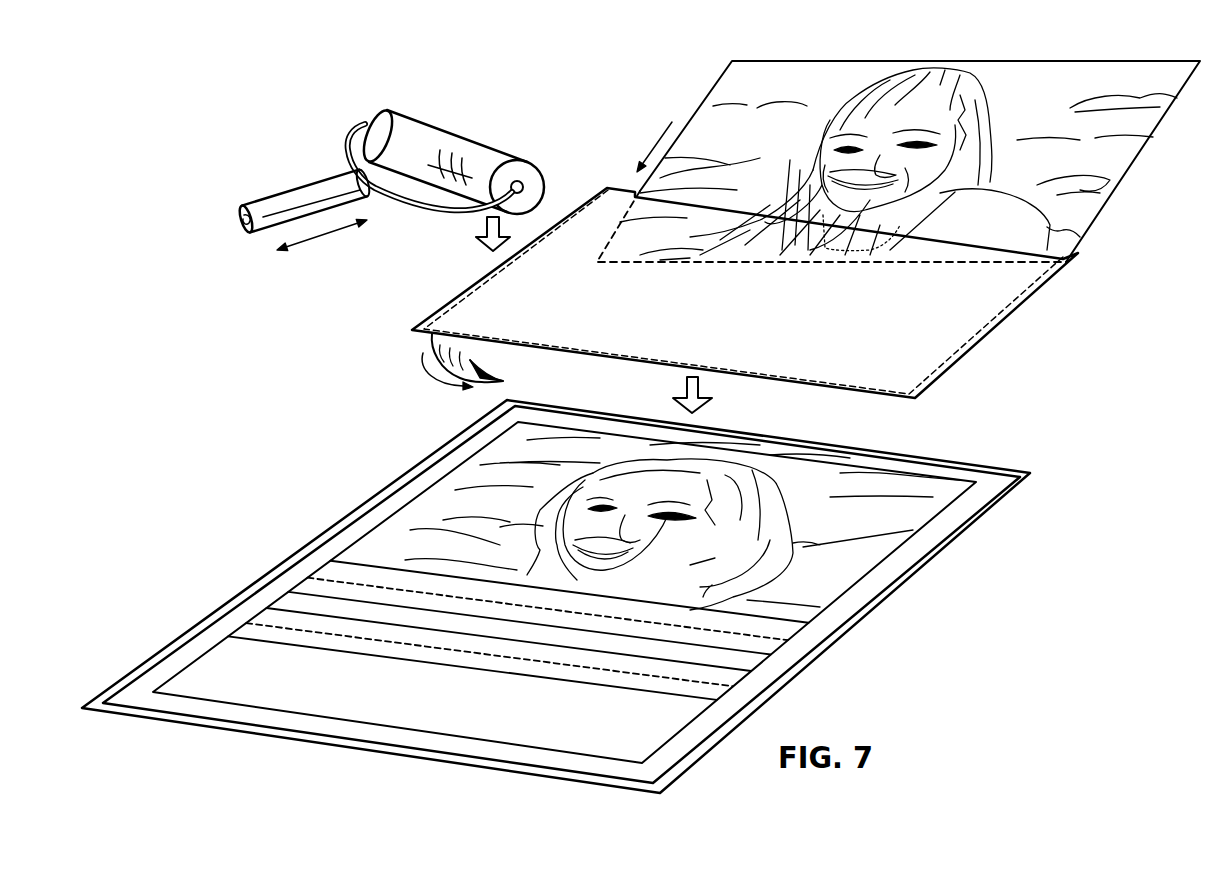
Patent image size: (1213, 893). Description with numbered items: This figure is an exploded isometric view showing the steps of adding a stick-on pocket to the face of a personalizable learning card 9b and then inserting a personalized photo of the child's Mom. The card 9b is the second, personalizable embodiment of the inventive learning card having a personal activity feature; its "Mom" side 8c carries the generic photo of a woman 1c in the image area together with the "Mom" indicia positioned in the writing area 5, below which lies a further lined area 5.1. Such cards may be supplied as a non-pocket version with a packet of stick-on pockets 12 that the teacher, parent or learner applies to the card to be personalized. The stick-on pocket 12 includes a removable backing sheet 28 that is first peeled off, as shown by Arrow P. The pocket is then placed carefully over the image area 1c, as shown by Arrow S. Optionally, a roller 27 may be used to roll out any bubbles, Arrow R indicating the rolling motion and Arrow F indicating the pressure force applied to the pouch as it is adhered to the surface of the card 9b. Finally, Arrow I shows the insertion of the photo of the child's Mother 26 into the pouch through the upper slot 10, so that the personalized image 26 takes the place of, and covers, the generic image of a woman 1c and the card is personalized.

The roller 27 is at (390, 132).
The personalized image 26 is at (1044, 116).
The upper slot 10 is at (1010, 249).
The stick-on pocket 12 is at (945, 375).
The removable backing sheet 28 is at (432, 340).
The Mom side of the card 8c is at (423, 506).
The generic photo of the woman 1c is at (745, 551).
The writing area 5 is at (303, 586).
The lower panel area 5.1 is at (427, 703).
The learning card 9b is at (942, 571).
The Arrow R (roll) R is at (337, 232).
The Arrow F (force) F is at (478, 230).
The Arrow S is at (698, 390).
The Arrow I (insert) I is at (653, 135).
The Arrow P is at (425, 372).